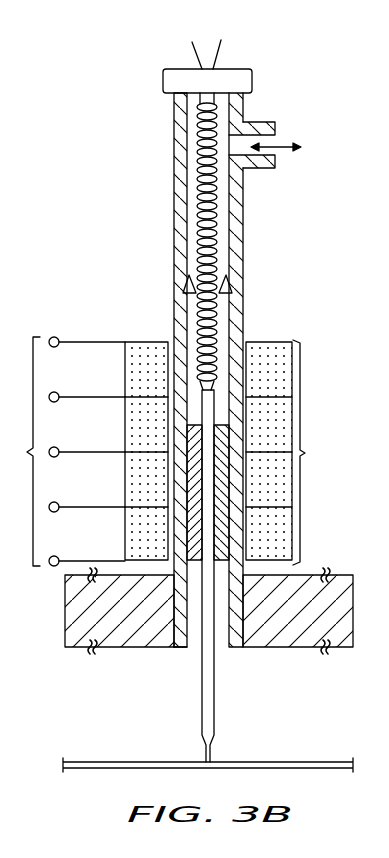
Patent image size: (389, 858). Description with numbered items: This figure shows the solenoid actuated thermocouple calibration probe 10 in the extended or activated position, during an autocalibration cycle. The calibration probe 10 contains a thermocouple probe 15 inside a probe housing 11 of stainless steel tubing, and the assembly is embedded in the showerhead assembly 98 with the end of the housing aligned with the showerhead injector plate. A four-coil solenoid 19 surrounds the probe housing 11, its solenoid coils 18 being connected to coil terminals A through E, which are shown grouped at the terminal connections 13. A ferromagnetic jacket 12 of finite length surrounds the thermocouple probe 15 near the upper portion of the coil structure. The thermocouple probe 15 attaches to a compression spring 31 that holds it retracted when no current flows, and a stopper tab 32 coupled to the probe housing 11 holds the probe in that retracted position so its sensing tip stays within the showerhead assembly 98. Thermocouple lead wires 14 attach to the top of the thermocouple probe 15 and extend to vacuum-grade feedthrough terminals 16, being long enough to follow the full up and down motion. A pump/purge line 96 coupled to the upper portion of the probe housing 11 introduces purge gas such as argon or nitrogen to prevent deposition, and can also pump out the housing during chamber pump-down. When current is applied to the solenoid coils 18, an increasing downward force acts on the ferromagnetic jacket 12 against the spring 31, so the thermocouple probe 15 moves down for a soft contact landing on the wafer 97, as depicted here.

The solenoid actuated thermocouple calibration probe 10 is at (108, 60).
The vacuum-grade thermocouple feedthrough terminals 16 is at (215, 68).
The probe housing 11 is at (247, 617).
The pump/purge line 96 is at (268, 122).
The thermocouple lead wires 14 is at (215, 214).
The compression spring 31 is at (198, 228).
The stopper tab 32 is at (188, 278).
The ferromagnetic jacket 12 is at (190, 488).
The thermocouple probe 15 is at (195, 683).
The solenoid coils 18 is at (231, 452).
The solenoid 19 is at (341, 420).
The terminals 13 is at (64, 441).
The showerhead assembly 98 is at (138, 619).
The wafer 97 is at (288, 762).